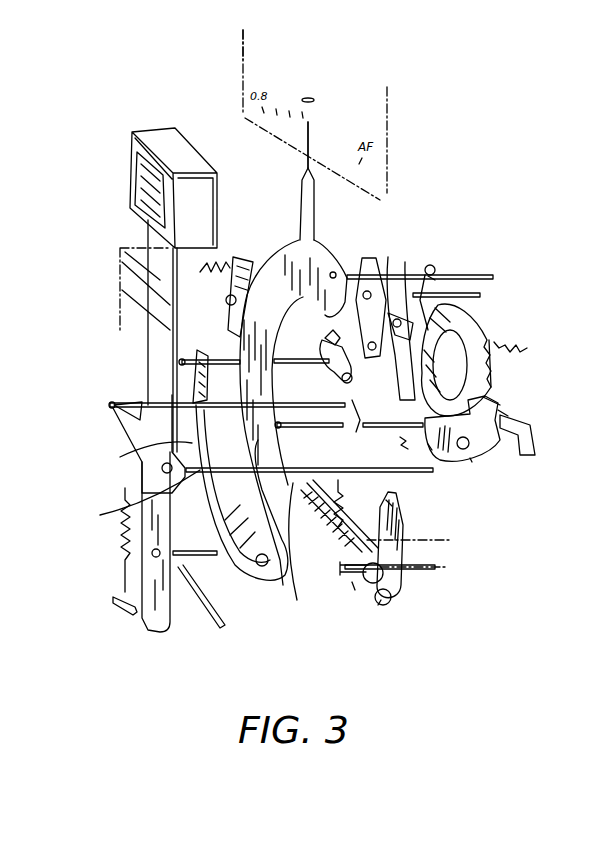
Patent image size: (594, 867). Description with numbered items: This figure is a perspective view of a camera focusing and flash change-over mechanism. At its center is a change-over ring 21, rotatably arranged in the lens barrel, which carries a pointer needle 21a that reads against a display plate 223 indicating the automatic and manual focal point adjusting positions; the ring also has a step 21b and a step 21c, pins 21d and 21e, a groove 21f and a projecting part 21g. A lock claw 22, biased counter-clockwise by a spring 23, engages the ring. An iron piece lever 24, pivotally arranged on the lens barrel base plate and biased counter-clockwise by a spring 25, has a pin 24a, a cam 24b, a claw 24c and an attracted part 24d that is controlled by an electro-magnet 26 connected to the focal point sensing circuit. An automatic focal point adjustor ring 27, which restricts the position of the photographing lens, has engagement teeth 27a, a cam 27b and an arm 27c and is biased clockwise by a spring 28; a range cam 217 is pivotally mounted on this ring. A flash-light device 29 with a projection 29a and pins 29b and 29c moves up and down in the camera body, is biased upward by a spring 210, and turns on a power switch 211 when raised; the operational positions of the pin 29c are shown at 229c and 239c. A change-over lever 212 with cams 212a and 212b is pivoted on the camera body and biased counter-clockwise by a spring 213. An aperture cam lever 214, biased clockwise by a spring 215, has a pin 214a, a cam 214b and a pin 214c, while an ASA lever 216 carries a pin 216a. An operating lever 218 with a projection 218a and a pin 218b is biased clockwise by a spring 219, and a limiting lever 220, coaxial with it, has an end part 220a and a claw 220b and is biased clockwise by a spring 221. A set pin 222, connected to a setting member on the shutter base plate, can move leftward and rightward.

The change-over ring 21 is at (318, 248).
The pointer needle 21a is at (308, 135).
The step 21b is at (277, 425).
The step 21c is at (312, 433).
The pin 21d is at (428, 266).
The pin 21e is at (110, 406).
The groove 21f is at (208, 375).
The projecting part 21g is at (322, 545).
The lock claw 22 is at (244, 260).
The spring 23 is at (200, 272).
The iron piece lever 24 is at (480, 448).
The pin 24a is at (418, 434).
The cam 24b is at (470, 460).
The claw 24c is at (498, 402).
The attracted part 24d is at (502, 412).
The spring 25 is at (430, 446).
The electro-magnet 26 is at (535, 448).
The automatic focal point adjustor ring 27 is at (460, 318).
The engagement teeth 27a is at (500, 370).
The cam 27b is at (452, 396).
The arm 27c is at (432, 270).
The spring 28 is at (524, 336).
The flash-light device 29 is at (145, 178).
The projection 29a is at (135, 405).
The pin 29b is at (212, 565).
The pin 29c is at (125, 507).
The spring 210 is at (122, 545).
The power switch 211 is at (205, 615).
The change-over lever 212 is at (138, 447).
The cam 212a is at (250, 478).
The cam 212b is at (208, 358).
The spring 213 is at (125, 515).
The aperture cam lever 214 is at (335, 362).
The pin 214a is at (288, 358).
The cam 214b is at (326, 340).
The pin 214c is at (408, 325).
The spring 215 is at (356, 430).
The ASA lever 216 is at (366, 262).
The pin 216a is at (378, 392).
The range cam 217 is at (392, 270).
The operating lever 218 is at (350, 578).
The projection 218a is at (296, 580).
The pin 218b is at (355, 592).
The spring 219 is at (348, 497).
The limiting lever 220 is at (400, 605).
The end part 220a is at (385, 605).
The claw 220b is at (392, 518).
The spring 221 is at (400, 565).
The set pin 222 is at (482, 290).
The display plate 223 is at (275, 50).
The operational position of pin 29c 229c is at (425, 572).
The operational position of pin 29c 239c is at (430, 541).